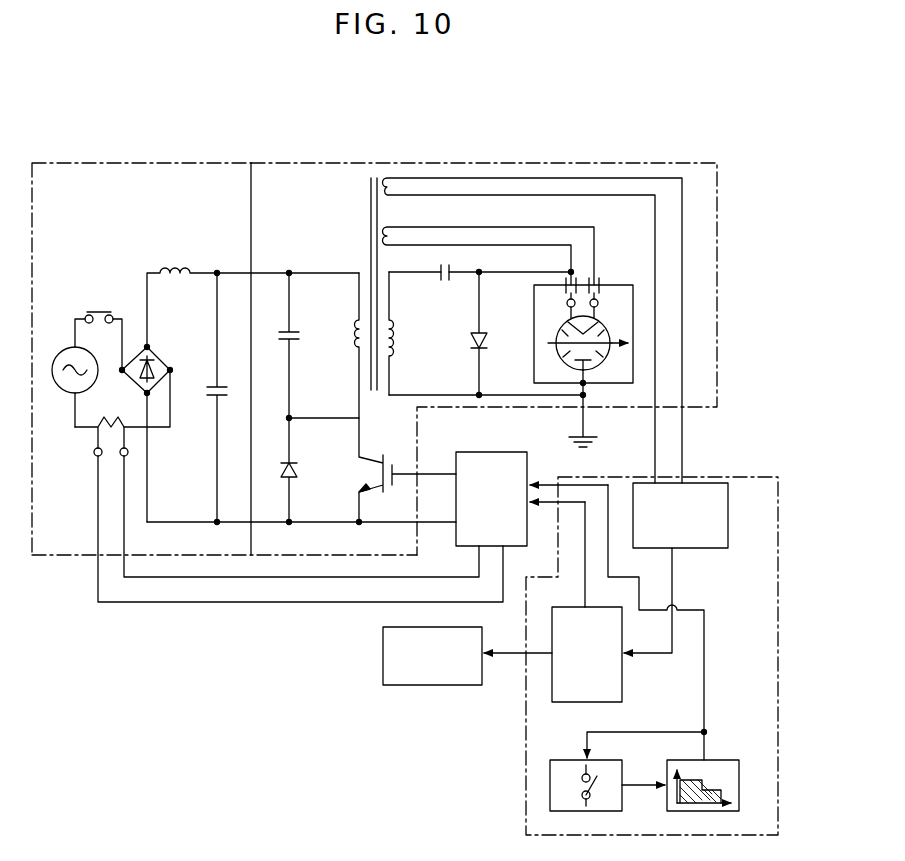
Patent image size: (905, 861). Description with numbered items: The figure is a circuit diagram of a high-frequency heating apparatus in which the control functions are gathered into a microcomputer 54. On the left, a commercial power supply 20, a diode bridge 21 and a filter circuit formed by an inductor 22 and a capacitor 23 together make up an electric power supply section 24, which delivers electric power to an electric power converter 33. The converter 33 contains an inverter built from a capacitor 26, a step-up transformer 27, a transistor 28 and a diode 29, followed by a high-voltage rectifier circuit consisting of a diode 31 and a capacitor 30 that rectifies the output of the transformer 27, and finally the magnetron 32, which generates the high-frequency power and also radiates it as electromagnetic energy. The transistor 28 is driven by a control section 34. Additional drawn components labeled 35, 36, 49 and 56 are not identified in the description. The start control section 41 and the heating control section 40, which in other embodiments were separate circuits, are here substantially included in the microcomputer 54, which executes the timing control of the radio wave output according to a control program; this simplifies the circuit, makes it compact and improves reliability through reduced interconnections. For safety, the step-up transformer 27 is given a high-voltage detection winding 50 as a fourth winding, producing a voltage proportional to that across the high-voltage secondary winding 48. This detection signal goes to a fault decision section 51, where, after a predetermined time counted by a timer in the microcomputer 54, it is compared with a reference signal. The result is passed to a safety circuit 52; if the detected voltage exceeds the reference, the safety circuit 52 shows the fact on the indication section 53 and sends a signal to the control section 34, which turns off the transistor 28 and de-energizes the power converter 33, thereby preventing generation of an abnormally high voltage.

The commercial power supply 20 is at (62, 352).
The diode bridge 21 is at (160, 360).
The inductor 22 is at (182, 270).
The capacitor 23 is at (205, 396).
The electric power supply section 24 is at (160, 163).
The capacitor 26 is at (300, 340).
The step-up transformer 27 is at (369, 220).
The transistor 28 is at (372, 465).
The diode 29 is at (300, 470).
The capacitor 30 is at (446, 282).
The diode 31 is at (488, 343).
The magnetron 32 is at (534, 300).
The electric power converter 33 is at (330, 163).
The control section 34 is at (497, 452).
The primary winding 35 is at (354, 333).
The current detecting winding 36 is at (92, 443).
The heating control section 40 is at (622, 798).
The start control section 41 is at (739, 795).
The high-voltage secondary winding 48 is at (398, 338).
The filament heating winding 49 is at (394, 238).
The high-voltage detection winding 50 is at (394, 188).
The fault decision section 51 is at (728, 515).
The safety circuit 52 is at (622, 680).
The indication section 53 is at (383, 650).
The microcomputer 54 is at (739, 477).
The power switch 56 is at (108, 312).